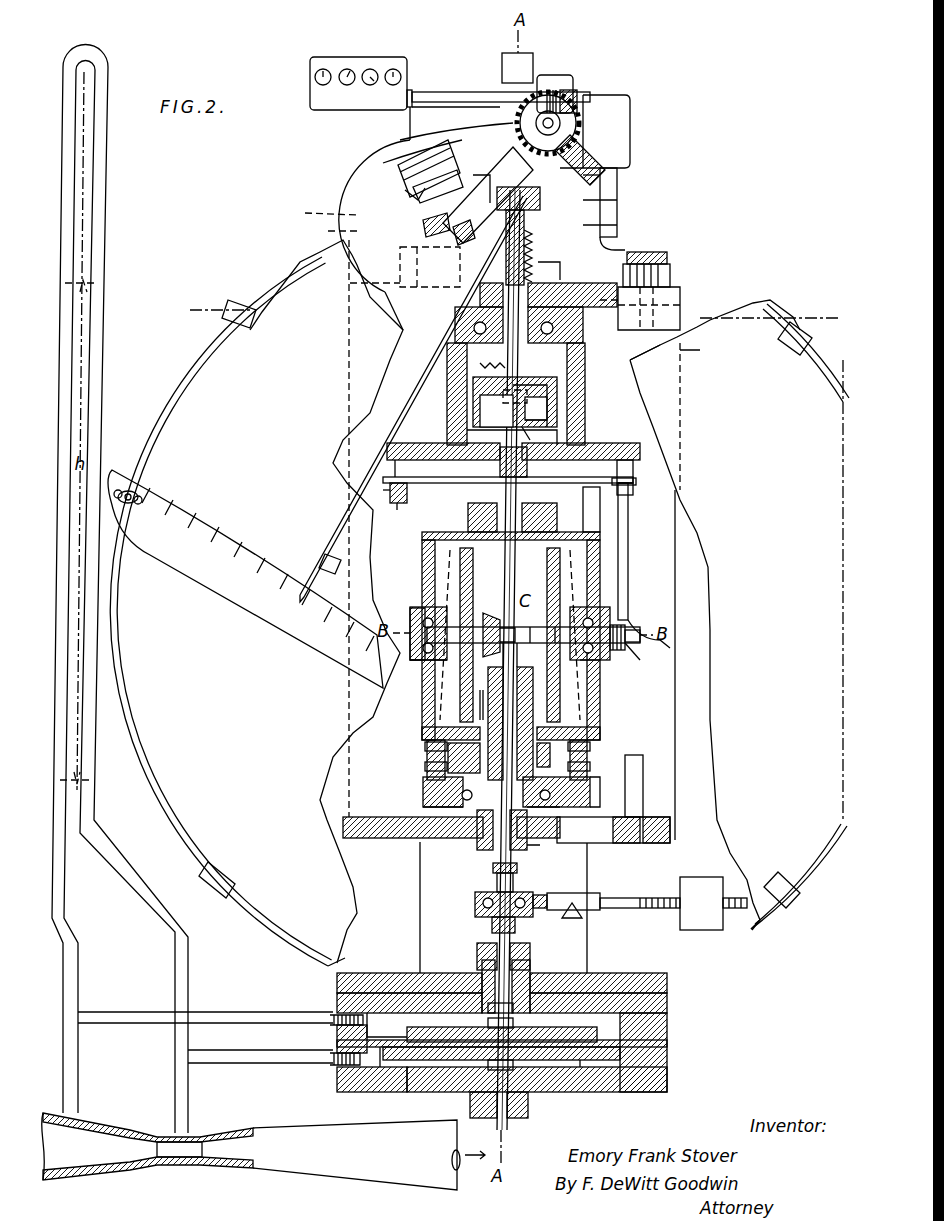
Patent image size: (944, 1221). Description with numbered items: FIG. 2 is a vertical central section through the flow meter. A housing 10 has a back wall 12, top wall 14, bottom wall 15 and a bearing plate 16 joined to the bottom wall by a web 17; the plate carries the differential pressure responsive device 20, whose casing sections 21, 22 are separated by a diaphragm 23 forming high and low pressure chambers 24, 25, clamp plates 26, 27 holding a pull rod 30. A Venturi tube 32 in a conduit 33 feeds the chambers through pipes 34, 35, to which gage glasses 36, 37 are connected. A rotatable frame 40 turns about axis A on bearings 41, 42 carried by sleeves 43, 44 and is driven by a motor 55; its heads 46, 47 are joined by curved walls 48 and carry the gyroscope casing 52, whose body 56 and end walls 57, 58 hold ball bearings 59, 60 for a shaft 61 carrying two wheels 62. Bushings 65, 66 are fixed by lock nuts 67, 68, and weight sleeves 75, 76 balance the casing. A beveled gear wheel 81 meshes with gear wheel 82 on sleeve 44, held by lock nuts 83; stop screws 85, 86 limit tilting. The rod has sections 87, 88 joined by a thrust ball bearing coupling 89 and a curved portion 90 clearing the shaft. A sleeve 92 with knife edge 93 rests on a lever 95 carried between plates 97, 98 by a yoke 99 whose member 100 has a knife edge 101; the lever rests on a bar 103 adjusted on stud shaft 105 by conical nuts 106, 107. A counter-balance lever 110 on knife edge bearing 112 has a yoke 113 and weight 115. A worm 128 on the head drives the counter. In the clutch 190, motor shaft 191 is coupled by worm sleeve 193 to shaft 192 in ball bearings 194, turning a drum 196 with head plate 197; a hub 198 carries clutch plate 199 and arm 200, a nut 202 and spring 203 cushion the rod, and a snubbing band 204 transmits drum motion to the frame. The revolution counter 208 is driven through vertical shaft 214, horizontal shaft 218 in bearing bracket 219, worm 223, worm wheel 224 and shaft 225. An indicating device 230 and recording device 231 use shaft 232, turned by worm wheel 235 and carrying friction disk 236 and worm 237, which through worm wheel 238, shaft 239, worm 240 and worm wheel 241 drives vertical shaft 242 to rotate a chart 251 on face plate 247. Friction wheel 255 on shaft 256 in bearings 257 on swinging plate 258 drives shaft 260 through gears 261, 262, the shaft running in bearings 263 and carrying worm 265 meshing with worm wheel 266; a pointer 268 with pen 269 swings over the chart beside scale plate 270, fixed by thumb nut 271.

The housing 10 is at (385, 838).
The back wall 12 is at (676, 755).
The top wall 14 is at (665, 290).
The bottom wall 15 is at (670, 830).
The horizontal bearing plate 16 is at (667, 988).
The web 17 is at (420, 945).
The differential pressure responsive device 20 is at (337, 1000).
The hollow section 21 is at (667, 1005).
The hollow section 22 is at (667, 1075).
The diaphragm 23 is at (667, 1043).
The high pressure chamber 24 is at (630, 1025).
The low pressure chamber 25 is at (555, 1070).
The clamp plate 26 is at (395, 1070).
The clamp plate 27 is at (438, 1060).
The pull rod 30 is at (518, 500).
The Venturi tube 32 is at (140, 1128).
The conduit 33 is at (365, 1125).
The pipe 34 is at (248, 1012).
The pipe 35 is at (268, 1065).
The gage glass 36 is at (53, 935).
The gage glass 37 is at (170, 912).
The rotatable frame 40 is at (440, 443).
The bearing 41 is at (583, 330).
The bearing 42 is at (435, 803).
The sleeve 43 is at (570, 313).
The sleeve 44 is at (472, 698).
The head 46 is at (585, 355).
The head 47 is at (590, 795).
The outwardly curved wall 48 is at (583, 510).
The gyroscope casing 52 is at (422, 536).
The motor 55 is at (620, 95).
The cylindrical body portion 56 is at (590, 532).
The end wall 57 is at (422, 716).
The end wall 58 is at (600, 714).
The ball bearing 59 is at (447, 597).
The ball bearing 60 is at (572, 612).
The shaft 61 is at (528, 627).
The wheel 62 is at (473, 578).
The bushing 65 is at (412, 612).
The bushing 66 is at (620, 655).
The lock nut 67 is at (420, 662).
The lock nut 68 is at (600, 660).
The sleeve 75 is at (468, 516).
The sleeve 76 is at (497, 757).
The beveled gear wheel 81 is at (490, 613).
The gear wheel 82 is at (533, 660).
The lock nut 83 is at (560, 807).
The stop screw 85 is at (425, 755).
The stop screw 86 is at (587, 762).
The lower section 87 is at (530, 950).
The upper section 88 is at (517, 868).
The thrust ball bearing coupling 89 is at (475, 908).
The curved portion 90 is at (500, 604).
The sleeve 92 is at (500, 465).
The knife edge 93 is at (527, 465).
The lever 95 is at (407, 495).
The horizontal plate 97 is at (420, 443).
The horizontal plate 98 is at (633, 458).
The depending yoke 99 is at (400, 475).
The horizontal member 100 is at (395, 513).
The knife edge 101 is at (388, 490).
The vertical bar 103 is at (628, 553).
The stud shaft 105 is at (675, 635).
The conical nut 106 is at (650, 665).
The conical nut 107 is at (640, 645).
The counter-balance lever 110 is at (560, 895).
The knife edge bearing 112 is at (578, 915).
The yoke 113 is at (513, 880).
The adjustable weight 115 is at (700, 930).
The worm 128 is at (680, 350).
The clutch 190 is at (547, 425).
The motor shaft 191 is at (617, 195).
The shaft 192 is at (552, 274).
The worm sleeve 193 is at (617, 228).
The ball bearing 194 is at (575, 365).
The drum 196 is at (557, 385).
The head plate 197 is at (560, 435).
The hub 198 is at (535, 437).
The clutch plate 199 is at (547, 413).
The arm 200 is at (508, 470).
The nut 202 is at (492, 404).
The spring 203 is at (492, 416).
The flexible snubbing band 204 is at (480, 398).
The revolution counter 208 is at (357, 57).
The vertical shaft 214 is at (617, 212).
The horizontal shaft 218 is at (605, 105).
The bearing bracket 219 is at (533, 62).
The worm 223 is at (578, 95).
The worm wheel 224 is at (562, 80).
The shaft 225 is at (435, 92).
The indicating device 230 is at (372, 183).
The recording device 231 is at (205, 338).
The shaft 232 is at (326, 229).
The worm wheel 235 is at (315, 211).
The friction drive disk 236 is at (445, 145).
The worm 237 is at (400, 255).
The worm wheel 238 is at (415, 280).
The horizontal shaft 239 is at (400, 272).
The worm 240 is at (670, 258).
The worm wheel 241 is at (672, 272).
The vertical shaft 242 is at (668, 252).
The face plate 247 is at (190, 352).
The chart 251 is at (315, 258).
The friction wheel 255 is at (405, 193).
The shaft 256 is at (405, 165).
The bearing 257 is at (402, 178).
The swinging plate 258 is at (410, 147).
The shaft 260 is at (585, 128).
The gear 261 is at (425, 232).
The gear 262 is at (450, 172).
The bearing 263 is at (487, 187).
The worm 265 is at (610, 150).
The worm wheel 266 is at (620, 118).
The pointer 268 is at (342, 522).
The pen 269 is at (320, 558).
The scale plate 270 is at (238, 612).
The thumb nut 271 is at (122, 485).